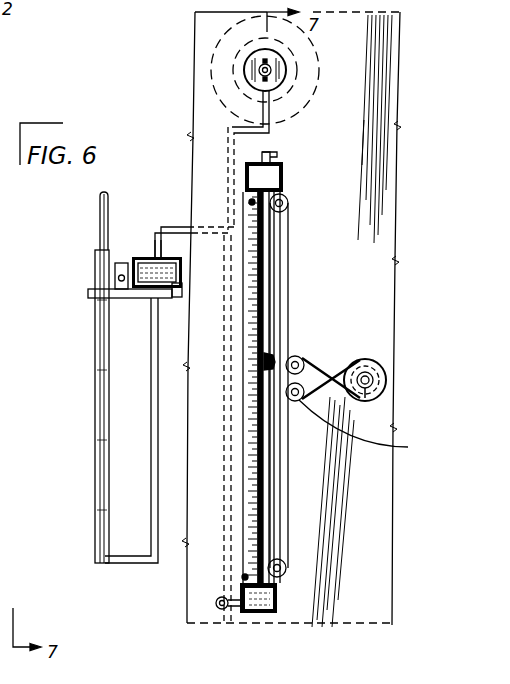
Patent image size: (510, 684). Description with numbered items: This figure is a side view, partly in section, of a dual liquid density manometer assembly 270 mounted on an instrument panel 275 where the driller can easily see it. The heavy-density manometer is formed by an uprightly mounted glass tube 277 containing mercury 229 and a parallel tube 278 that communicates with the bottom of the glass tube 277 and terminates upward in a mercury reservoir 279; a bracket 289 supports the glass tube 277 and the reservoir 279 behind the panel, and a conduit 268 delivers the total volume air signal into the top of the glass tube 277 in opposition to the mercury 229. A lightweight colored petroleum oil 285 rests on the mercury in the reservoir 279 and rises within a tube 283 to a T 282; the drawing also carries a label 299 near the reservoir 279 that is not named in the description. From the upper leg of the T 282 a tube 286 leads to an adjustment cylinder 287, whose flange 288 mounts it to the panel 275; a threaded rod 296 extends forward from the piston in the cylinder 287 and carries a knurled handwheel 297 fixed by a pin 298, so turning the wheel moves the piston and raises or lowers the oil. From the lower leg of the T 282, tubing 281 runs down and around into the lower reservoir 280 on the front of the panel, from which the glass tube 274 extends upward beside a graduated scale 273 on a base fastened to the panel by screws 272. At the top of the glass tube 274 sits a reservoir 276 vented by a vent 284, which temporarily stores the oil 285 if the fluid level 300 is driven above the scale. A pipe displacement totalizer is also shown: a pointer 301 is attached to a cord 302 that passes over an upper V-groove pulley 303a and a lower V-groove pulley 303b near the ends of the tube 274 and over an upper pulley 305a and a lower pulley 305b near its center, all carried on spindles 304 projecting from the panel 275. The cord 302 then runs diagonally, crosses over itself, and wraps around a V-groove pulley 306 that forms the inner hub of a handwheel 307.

The mercury 229 is at (176, 285).
The conduit 268 is at (100, 208).
The dual liquid density manometer assembly 270 is at (297, 296).
The screws 272 is at (243, 577).
The scale 273 is at (245, 342).
The glass tube 274 is at (258, 465).
The instrument panel 275 is at (395, 490).
The reservoir 276 is at (284, 179).
The glass tube 277 is at (95, 390).
The tube 278 is at (151, 372).
The mercury reservoir 279 is at (178, 289).
The lower reservoir 280 is at (278, 596).
The tubing 281 is at (217, 607).
The T 282 is at (226, 232).
The tube 283 is at (183, 226).
The vent 284 is at (275, 156).
The oil 285 is at (168, 270).
The tube 286 is at (226, 134).
The cylinder 287 is at (237, 60).
The flange 288 is at (229, 30).
The bracket 289 is at (90, 297).
The threaded rod 296 is at (246, 75).
The knurled handwheel 297 is at (272, 68).
The pin 298 is at (272, 88).
The inlet tube 299 is at (147, 257).
The fluid level 300 is at (265, 362).
The pointer 301 is at (269, 365).
The cord 302 is at (268, 418).
The upper V-groove pulley 303a is at (289, 204).
The lower V-groove pulley 303b is at (286, 563).
The spindles 304 is at (284, 210).
The upper pulley 305a is at (301, 361).
The lower pulley 305b is at (300, 396).
The V-groove pulley 306 is at (386, 366).
The handwheel 307 is at (386, 388).